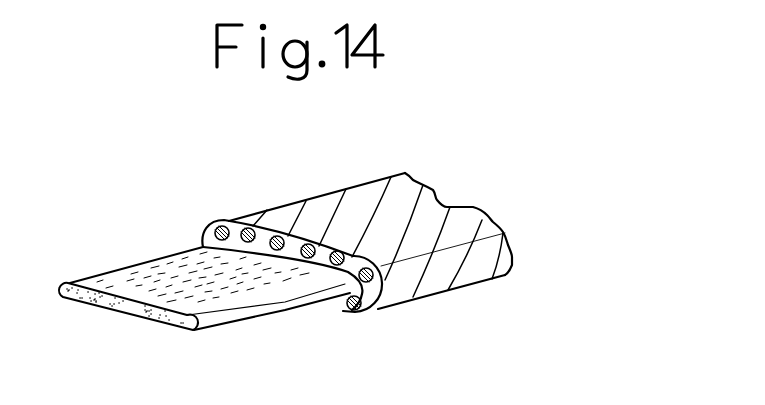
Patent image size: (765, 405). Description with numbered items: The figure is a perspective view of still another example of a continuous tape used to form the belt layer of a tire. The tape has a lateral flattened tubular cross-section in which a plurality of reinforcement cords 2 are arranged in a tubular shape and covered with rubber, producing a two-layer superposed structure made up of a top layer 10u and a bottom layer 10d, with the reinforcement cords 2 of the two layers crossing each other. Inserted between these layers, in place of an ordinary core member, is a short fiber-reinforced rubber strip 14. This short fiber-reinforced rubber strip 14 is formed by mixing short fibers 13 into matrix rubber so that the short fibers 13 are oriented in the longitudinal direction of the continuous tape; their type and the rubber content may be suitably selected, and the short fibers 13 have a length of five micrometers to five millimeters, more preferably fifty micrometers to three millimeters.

The reinforcement cords 2 is at (366, 313).
The top layer 10u is at (272, 226).
The bottom layer 10d is at (345, 309).
The short fibers 13 is at (138, 268).
The short fiber-reinforced rubber strip 14 is at (229, 319).